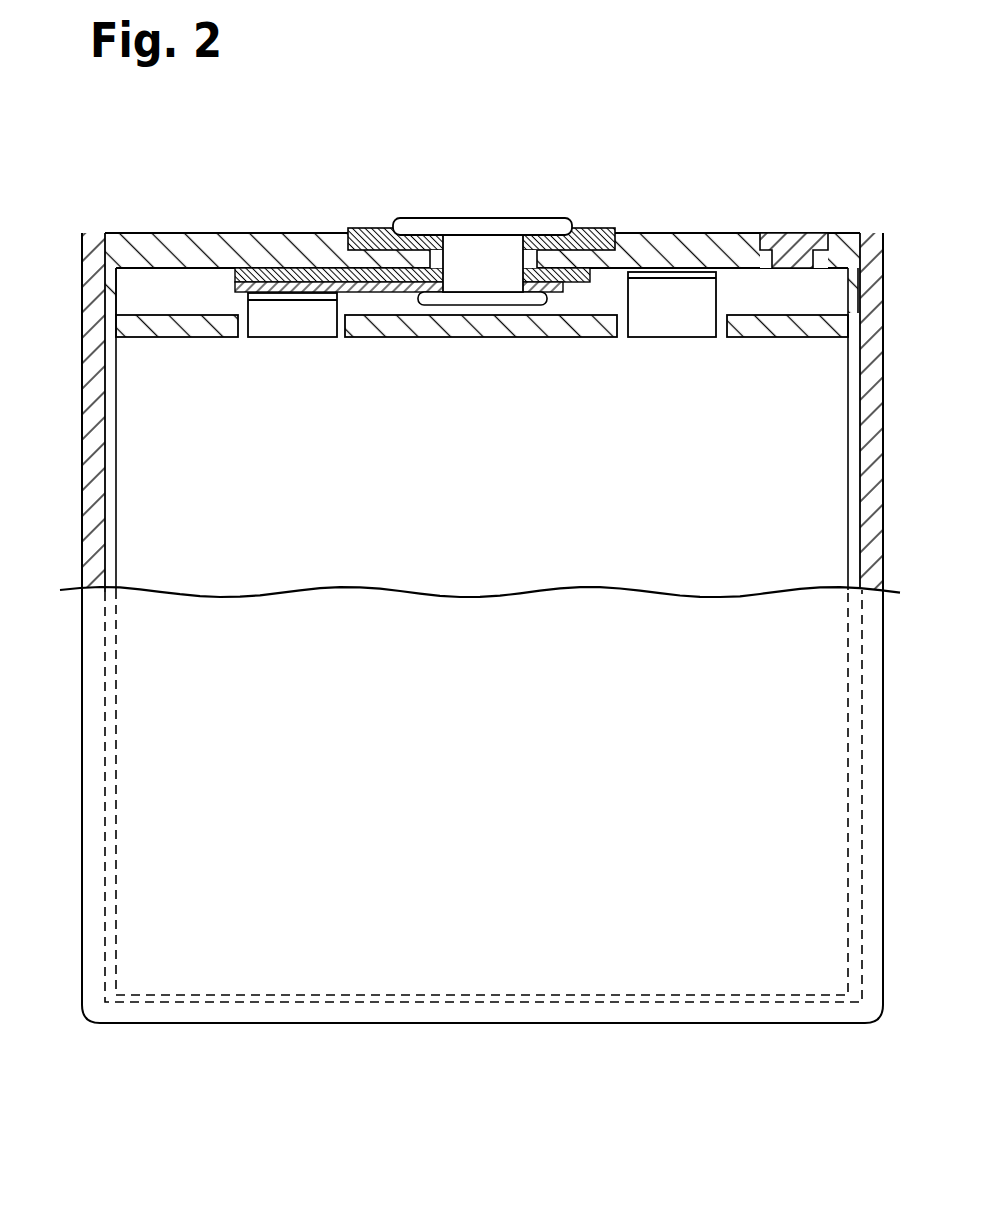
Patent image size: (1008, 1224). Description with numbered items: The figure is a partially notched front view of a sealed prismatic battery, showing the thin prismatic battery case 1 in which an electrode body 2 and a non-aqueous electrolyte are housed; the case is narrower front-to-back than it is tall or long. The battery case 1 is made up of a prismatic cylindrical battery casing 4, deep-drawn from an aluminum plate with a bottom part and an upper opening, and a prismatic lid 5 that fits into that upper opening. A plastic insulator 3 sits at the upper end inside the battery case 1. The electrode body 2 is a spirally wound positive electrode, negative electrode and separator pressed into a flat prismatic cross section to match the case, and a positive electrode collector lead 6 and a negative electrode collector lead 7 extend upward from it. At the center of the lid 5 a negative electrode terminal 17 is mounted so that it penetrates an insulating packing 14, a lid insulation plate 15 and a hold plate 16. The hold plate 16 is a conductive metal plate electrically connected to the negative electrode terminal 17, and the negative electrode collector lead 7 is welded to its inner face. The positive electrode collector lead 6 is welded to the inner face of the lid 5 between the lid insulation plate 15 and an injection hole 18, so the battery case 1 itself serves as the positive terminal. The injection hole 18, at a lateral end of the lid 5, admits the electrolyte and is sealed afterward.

The battery case 1 is at (56, 249).
The electrode body 2 is at (445, 545).
The insulator 3 is at (800, 323).
The battery casing 4 is at (878, 268).
The lid 5 is at (680, 232).
The positive electrode collector lead 6 is at (672, 315).
The negative electrode collector lead 7 is at (287, 327).
The insulating packing 14 is at (362, 235).
The lid insulation plate 15 is at (300, 278).
The hold plate 16 is at (382, 292).
The negative electrode terminal 17 is at (487, 226).
The injection hole 18 is at (803, 260).